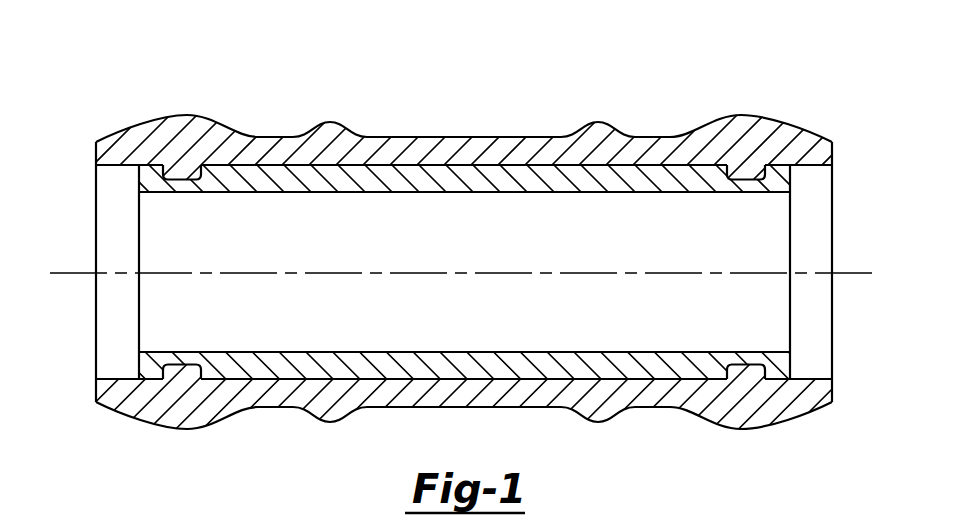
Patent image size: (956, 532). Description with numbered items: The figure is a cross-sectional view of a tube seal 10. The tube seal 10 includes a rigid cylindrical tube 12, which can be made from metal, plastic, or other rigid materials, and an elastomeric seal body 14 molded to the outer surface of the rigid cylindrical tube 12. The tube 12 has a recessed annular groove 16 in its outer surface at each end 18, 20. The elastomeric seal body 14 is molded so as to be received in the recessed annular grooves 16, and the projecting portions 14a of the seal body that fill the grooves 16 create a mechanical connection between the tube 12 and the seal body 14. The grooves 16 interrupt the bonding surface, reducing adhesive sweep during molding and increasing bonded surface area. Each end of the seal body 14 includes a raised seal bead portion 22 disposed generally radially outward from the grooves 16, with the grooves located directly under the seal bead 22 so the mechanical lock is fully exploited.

The tube seal 10 is at (470, 218).
The rigid cylindrical tube 12 is at (547, 181).
The elastomeric seal body 14 is at (466, 148).
The projecting portions of the elastomeric seal body 14a is at (183, 365).
The recessed annular groove 16 is at (184, 179).
The end 18 is at (157, 352).
The end 20 is at (778, 350).
The raised seal bead portion 22 is at (172, 130).